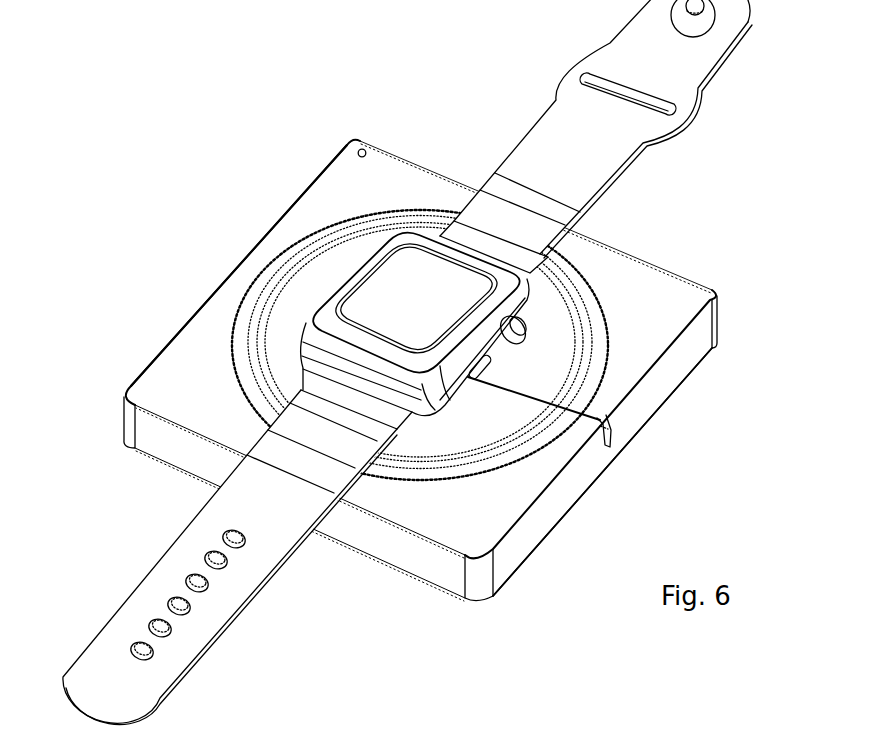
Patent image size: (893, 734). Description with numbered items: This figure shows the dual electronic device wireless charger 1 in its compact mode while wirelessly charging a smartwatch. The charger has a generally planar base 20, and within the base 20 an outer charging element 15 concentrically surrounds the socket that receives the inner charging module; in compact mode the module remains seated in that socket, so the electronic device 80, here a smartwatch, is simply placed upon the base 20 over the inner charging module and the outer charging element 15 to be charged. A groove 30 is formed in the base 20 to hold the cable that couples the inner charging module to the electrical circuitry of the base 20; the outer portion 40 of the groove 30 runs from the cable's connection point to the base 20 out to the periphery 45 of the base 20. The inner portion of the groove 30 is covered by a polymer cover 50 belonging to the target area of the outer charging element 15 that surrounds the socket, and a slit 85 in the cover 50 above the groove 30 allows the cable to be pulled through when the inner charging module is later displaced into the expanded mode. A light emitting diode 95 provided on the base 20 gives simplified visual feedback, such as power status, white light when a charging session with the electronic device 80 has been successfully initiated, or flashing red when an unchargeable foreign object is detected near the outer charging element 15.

The dual electronic device wireless charger 1 is at (176, 290).
The outer charging element 15 is at (272, 378).
The base 20 is at (310, 212).
The groove 30 is at (607, 432).
The outer portion of the groove 40 is at (607, 432).
The periphery 45 is at (580, 500).
The polymer cover 50 is at (305, 303).
The electronic device 80 is at (410, 280).
The slit 85 is at (490, 381).
The light emitting diode 95 is at (353, 139).